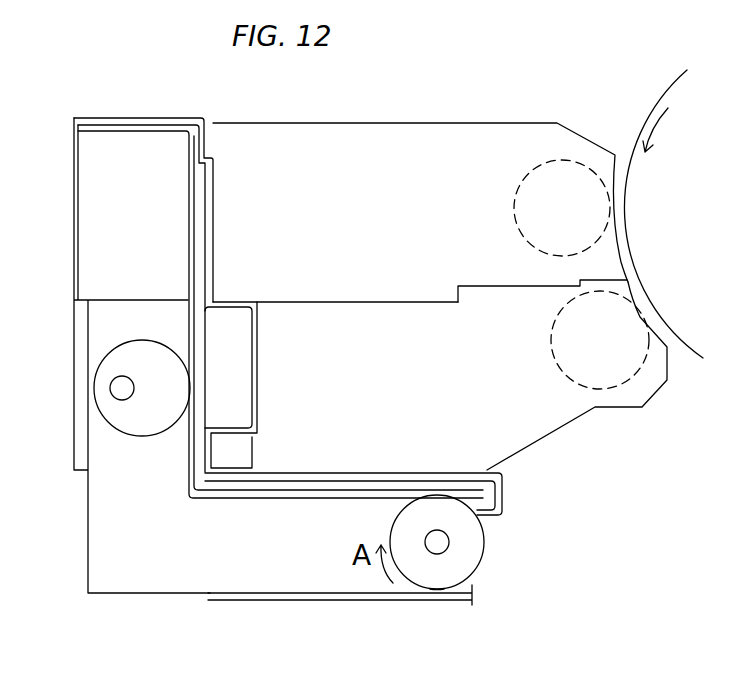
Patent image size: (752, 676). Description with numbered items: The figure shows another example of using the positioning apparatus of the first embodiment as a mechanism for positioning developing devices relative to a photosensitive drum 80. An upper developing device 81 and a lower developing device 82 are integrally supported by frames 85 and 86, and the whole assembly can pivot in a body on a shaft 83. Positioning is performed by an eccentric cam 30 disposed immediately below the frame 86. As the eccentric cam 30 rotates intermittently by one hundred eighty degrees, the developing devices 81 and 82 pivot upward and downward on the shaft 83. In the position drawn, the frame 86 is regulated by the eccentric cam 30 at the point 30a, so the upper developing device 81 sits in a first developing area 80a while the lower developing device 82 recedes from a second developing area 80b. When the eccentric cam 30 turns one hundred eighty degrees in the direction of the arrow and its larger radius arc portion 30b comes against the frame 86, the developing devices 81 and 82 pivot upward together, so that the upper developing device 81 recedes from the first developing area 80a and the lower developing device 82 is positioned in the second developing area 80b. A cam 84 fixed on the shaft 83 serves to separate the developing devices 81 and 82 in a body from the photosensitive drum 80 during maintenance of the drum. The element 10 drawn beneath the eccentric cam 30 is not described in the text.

The recording sheet 10 is at (418, 518).
The eccentric cam 30 is at (485, 548).
The point 30a is at (437, 495).
The larger radius arc portion 30b is at (438, 588).
The photosensitive drum 80 is at (655, 108).
The first developing area 80a is at (626, 212).
The second developing area 80b is at (655, 315).
The upper developing device 81 is at (410, 120).
The lower developing device 82 is at (553, 428).
The shaft 83 is at (115, 388).
The cam 84 is at (138, 437).
The frame 85 is at (188, 263).
The frame 86 is at (268, 499).